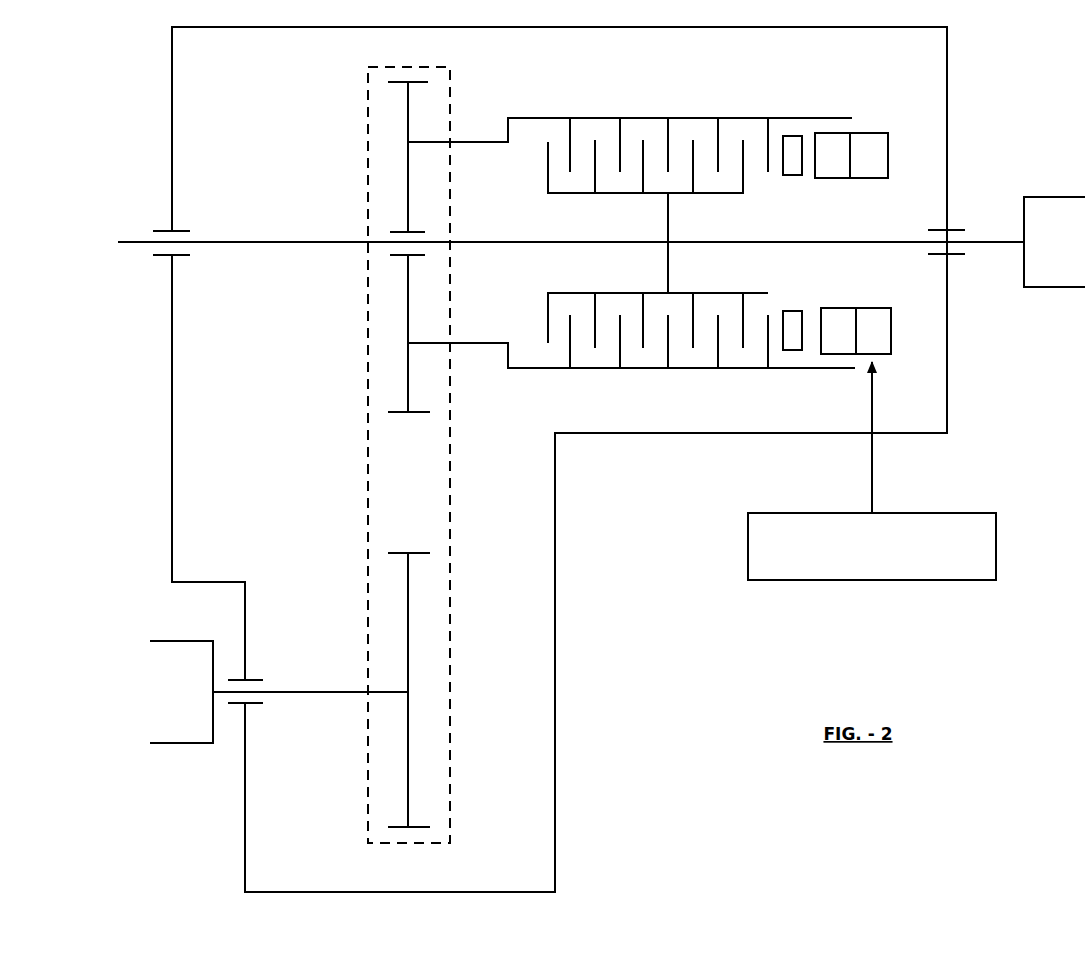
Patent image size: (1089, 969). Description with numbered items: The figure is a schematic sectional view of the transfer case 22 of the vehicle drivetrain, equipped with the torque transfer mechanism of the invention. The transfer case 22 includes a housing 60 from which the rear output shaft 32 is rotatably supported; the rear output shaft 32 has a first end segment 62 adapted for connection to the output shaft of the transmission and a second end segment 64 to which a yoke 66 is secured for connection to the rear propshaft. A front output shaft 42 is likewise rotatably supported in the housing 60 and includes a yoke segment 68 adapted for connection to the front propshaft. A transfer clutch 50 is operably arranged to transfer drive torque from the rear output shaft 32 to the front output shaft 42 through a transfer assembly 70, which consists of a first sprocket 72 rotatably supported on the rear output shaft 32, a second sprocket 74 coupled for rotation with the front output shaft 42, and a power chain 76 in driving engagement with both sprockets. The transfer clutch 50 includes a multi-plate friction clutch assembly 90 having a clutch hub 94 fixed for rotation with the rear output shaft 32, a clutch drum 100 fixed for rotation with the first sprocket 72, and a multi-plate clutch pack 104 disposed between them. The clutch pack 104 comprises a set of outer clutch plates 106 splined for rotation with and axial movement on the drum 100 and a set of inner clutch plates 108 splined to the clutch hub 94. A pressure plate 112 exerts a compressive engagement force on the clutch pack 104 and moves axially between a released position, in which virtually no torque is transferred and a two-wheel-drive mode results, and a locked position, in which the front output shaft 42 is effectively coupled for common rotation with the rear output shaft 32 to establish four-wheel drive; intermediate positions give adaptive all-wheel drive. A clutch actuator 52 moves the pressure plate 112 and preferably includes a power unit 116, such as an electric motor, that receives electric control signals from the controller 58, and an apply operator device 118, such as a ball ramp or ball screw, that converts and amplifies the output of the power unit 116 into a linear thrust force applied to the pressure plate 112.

The transfer case 22 is at (1002, 125).
The rear output shaft 32 is at (972, 245).
The front output shaft 42 is at (300, 692).
The transfer clutch 50 is at (656, 383).
The clutch actuator 52 is at (704, 137).
The controller 58 is at (758, 543).
The housing 60 is at (947, 373).
The first end segment 62 is at (228, 242).
The second end segment 64 is at (997, 242).
The yoke 66 is at (1045, 287).
The yoke segment 68 is at (165, 641).
The transfer assembly 70 is at (457, 455).
The first sprocket 72 is at (408, 108).
The second sprocket 74 is at (408, 625).
The power chain 76 is at (368, 465).
The multi-plate friction clutch assembly 90 is at (749, 382).
The clutch hub 94 is at (668, 222).
The clutch drum 100 is at (530, 118).
The multi-plate clutch pack 104 is at (687, 137).
The outer clutch plates 106 is at (718, 143).
The inner clutch plates 108 is at (743, 177).
The pressure plate 112 is at (793, 145).
The power unit 116 is at (876, 318).
The apply operator device 118 is at (835, 318).